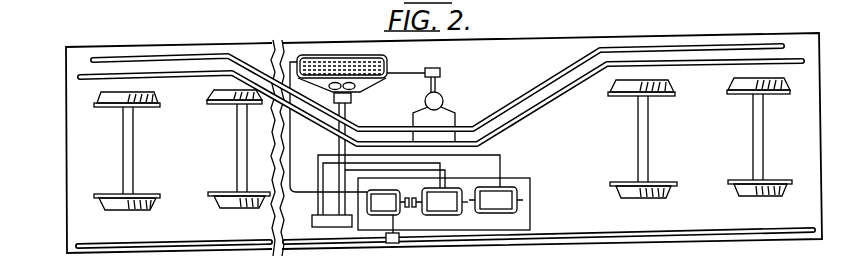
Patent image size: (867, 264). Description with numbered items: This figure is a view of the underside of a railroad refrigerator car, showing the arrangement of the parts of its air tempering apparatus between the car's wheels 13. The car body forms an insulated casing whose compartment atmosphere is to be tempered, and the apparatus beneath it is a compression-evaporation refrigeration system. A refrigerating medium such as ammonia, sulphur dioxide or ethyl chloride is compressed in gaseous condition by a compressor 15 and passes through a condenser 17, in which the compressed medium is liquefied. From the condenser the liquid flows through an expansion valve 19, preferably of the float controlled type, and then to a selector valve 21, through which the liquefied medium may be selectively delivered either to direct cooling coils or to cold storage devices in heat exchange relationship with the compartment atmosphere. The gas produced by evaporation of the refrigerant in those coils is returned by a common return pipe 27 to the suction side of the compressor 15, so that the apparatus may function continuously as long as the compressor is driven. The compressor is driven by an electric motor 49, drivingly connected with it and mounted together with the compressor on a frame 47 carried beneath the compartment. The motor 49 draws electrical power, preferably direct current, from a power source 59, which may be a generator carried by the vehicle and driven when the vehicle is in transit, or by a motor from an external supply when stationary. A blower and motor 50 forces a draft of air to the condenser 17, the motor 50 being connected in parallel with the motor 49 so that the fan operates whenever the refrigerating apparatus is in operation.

The wheels 13 is at (129, 208).
The compressor 15 is at (383, 202).
The condenser 17 is at (387, 59).
The expansion valve 19 is at (440, 68).
The selector valve 21 is at (442, 97).
The common return pipe 27 is at (577, 236).
The frame 47 is at (530, 182).
The electric motor 49 is at (445, 201).
The blower and motor 50 is at (351, 98).
The power source 59 is at (496, 200).